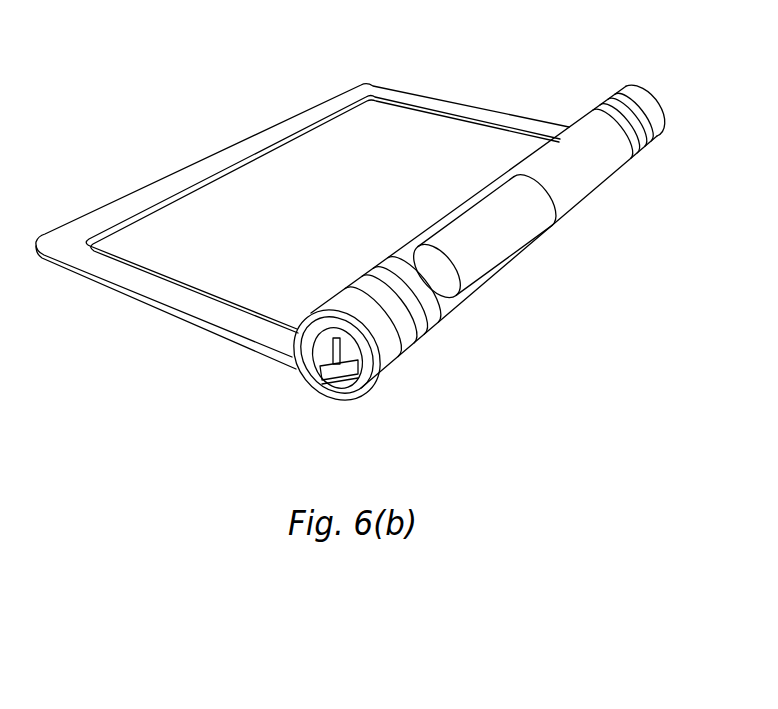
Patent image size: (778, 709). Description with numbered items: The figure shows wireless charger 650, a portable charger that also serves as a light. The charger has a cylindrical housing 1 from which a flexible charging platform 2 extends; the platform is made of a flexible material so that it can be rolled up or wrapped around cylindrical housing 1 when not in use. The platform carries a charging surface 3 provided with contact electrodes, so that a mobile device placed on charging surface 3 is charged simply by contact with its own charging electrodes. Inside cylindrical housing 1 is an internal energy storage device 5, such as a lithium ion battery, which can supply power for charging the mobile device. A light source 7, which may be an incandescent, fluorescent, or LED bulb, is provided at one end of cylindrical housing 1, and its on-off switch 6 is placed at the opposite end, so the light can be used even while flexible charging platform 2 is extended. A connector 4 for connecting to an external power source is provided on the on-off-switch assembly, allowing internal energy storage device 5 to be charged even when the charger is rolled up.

The wireless charger 650 is at (200, 39).
The cylindrical housing 1 is at (521, 252).
The flexible charging platform 2 is at (128, 296).
The charging surface 3 is at (254, 262).
The connector 4 is at (337, 384).
The internal energy storage device 5 is at (485, 274).
The on-off switch 6 is at (322, 371).
The light source 7 is at (659, 103).